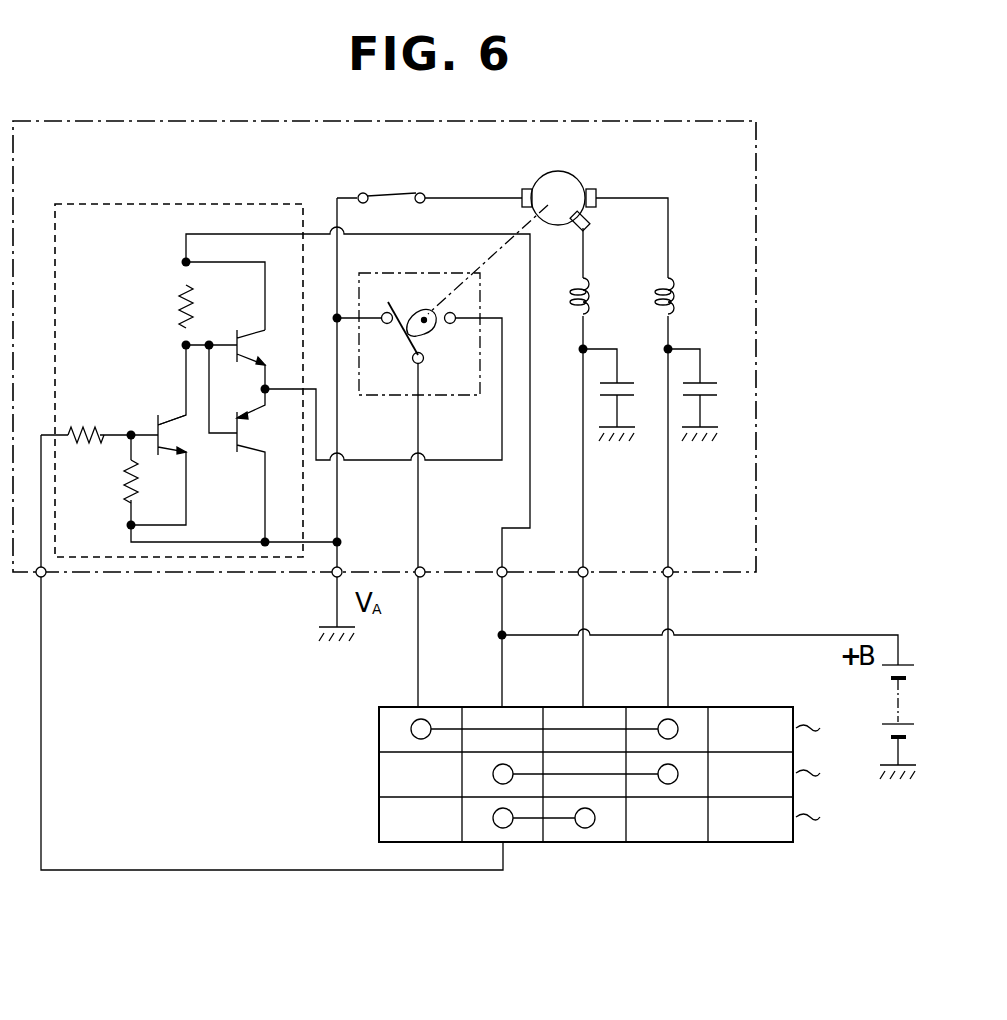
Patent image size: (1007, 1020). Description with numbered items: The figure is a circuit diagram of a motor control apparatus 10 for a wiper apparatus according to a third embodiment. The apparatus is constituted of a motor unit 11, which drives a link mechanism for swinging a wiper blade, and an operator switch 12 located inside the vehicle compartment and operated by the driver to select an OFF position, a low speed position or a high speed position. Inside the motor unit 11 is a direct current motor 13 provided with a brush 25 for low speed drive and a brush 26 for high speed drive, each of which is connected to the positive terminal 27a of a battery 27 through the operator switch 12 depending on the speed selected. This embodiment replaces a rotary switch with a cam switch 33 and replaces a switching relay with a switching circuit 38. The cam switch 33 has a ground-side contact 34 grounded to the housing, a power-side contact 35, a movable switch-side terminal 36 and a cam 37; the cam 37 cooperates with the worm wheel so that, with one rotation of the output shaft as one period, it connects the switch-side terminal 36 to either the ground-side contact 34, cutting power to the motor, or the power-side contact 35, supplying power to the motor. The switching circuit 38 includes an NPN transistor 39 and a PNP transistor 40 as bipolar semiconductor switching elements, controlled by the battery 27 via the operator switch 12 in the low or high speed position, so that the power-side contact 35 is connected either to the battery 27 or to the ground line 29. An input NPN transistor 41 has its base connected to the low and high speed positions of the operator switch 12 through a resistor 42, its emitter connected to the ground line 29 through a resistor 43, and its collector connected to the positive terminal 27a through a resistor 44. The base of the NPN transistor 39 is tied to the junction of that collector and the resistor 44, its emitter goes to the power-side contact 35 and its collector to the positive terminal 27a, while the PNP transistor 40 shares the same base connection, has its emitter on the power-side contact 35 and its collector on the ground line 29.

The motor control apparatus 10 is at (840, 205).
The motor unit 11 is at (756, 262).
The operator switch 12 is at (722, 843).
The direct current motor 13 is at (565, 174).
The brush for low speed drive 25 is at (592, 182).
The brush for high speed drive 26 is at (590, 220).
The battery 27 is at (936, 706).
The positive terminal 27a is at (904, 658).
The ground line 29 is at (342, 548).
The cam switch 33 is at (419, 338).
The ground-side contact 34 is at (388, 324).
The power-side contact 35 is at (452, 324).
The switch-side terminal 36 is at (422, 363).
The cam 37 is at (415, 316).
The switching circuit 38 is at (123, 204).
The NPN transistor 39 is at (238, 330).
The PNP transistor 40 is at (236, 444).
The NPN transistor 41 is at (156, 416).
The resistor 42 is at (78, 424).
The resistor 43 is at (127, 478).
The resistor 44 is at (182, 299).